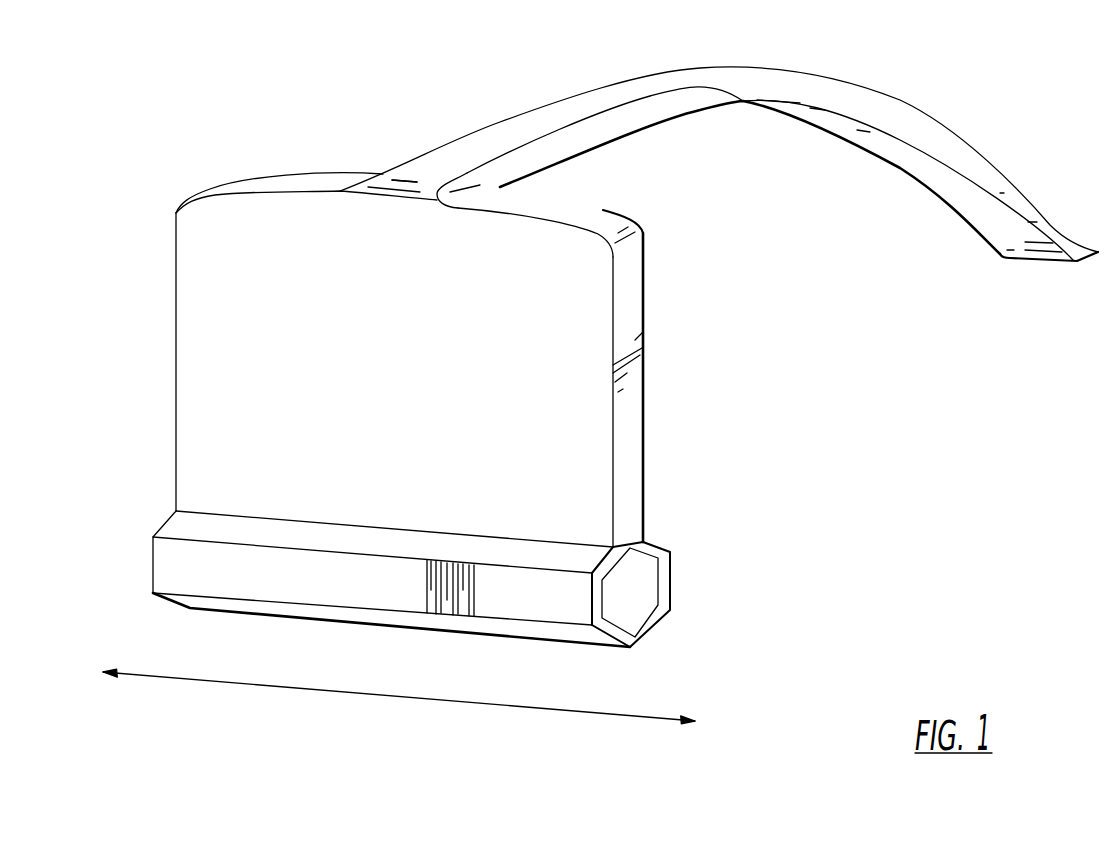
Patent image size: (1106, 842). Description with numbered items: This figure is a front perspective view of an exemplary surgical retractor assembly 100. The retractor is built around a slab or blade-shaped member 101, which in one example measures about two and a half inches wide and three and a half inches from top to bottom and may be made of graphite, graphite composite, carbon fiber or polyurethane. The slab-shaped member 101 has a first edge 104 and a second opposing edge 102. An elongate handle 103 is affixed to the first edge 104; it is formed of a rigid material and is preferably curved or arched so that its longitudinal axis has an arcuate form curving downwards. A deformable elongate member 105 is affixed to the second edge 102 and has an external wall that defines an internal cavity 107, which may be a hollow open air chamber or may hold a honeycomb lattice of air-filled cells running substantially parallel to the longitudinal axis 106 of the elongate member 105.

The surgical retractor assembly 100 is at (600, 378).
The slab or blade-shaped member 101 is at (590, 442).
The second opposing edge 102 is at (343, 523).
The elongate handle 103 is at (600, 102).
The first edge 104 is at (352, 188).
The deformable elongate member 105 is at (267, 607).
The longitudinal axis 106 is at (330, 692).
The internal cavity 107 is at (640, 588).